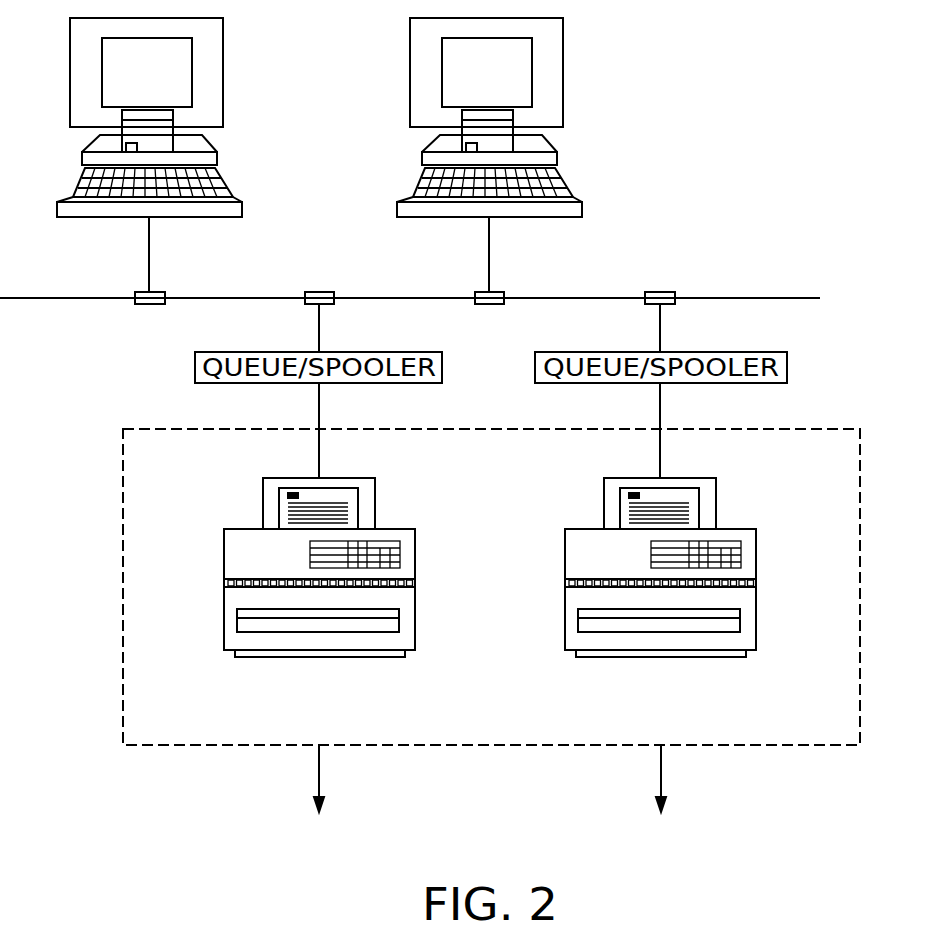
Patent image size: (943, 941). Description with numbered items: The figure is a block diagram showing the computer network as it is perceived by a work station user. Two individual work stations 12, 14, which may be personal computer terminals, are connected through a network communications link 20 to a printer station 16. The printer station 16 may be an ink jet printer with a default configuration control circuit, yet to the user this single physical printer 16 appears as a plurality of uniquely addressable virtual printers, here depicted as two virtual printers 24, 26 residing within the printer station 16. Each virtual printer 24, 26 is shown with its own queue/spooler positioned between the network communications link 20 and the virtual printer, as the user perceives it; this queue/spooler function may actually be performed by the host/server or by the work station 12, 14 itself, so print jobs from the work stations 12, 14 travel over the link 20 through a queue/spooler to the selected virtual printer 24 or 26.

The work station 12 is at (212, 36).
The work station 14 is at (553, 36).
The printer station 16 is at (133, 495).
The network communications link 20 is at (537, 298).
The virtual printer 24 is at (237, 552).
The virtual printer 26 is at (580, 553).